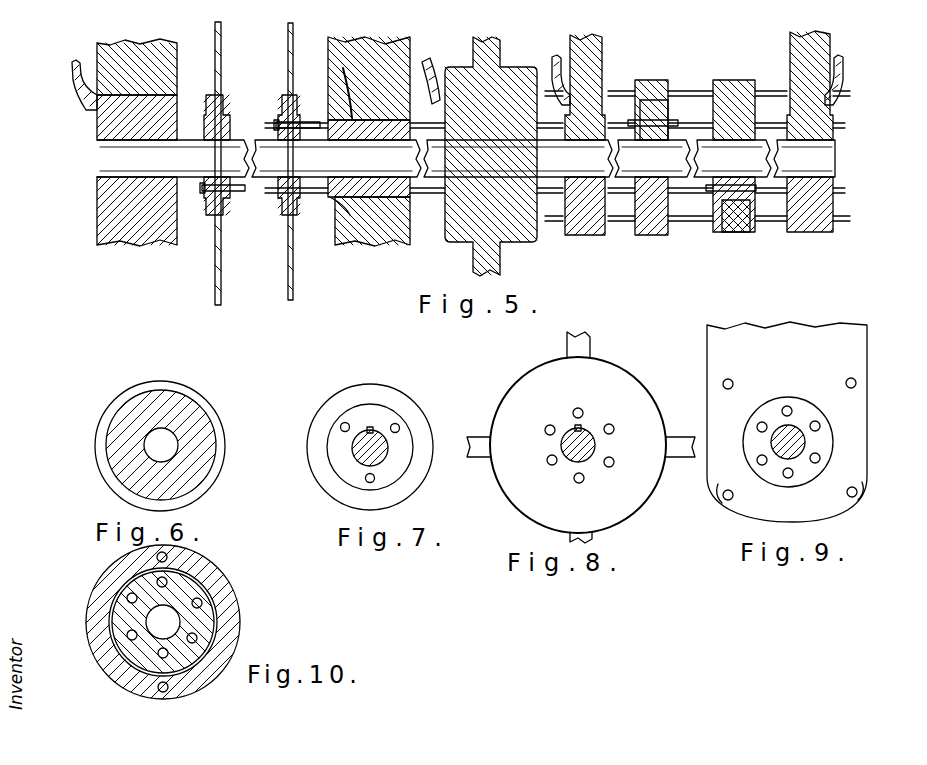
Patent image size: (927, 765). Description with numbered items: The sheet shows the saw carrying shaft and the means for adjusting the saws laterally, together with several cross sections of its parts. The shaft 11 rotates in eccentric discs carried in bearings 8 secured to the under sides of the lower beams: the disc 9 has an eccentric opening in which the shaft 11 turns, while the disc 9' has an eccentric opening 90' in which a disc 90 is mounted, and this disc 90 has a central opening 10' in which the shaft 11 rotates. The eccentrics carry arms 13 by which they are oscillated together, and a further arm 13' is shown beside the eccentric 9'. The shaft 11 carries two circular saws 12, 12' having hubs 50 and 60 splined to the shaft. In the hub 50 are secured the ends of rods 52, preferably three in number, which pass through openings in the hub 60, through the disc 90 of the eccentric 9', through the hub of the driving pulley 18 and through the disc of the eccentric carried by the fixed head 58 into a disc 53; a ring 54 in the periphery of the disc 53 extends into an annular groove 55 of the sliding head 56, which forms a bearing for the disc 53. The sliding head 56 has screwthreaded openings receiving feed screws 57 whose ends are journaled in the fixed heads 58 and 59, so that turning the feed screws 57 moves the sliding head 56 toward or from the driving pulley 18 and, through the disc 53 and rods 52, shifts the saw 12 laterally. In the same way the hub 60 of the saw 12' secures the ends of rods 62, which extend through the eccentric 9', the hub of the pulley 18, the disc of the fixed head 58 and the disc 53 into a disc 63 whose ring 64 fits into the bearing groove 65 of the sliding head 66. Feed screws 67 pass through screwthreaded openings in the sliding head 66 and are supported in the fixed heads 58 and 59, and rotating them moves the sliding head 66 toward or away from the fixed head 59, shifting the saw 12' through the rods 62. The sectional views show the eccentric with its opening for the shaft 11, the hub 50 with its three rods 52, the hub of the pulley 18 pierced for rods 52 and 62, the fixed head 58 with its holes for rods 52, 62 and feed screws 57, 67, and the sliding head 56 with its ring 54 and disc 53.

In FIG. 5, the bearing 8 is at (113, 222).
In FIG. 5, the disc 9 is at (149, 89).
In FIG. 6, the disc 9 is at (160, 435).
In FIG. 5, the disc 9' is at (377, 82).
In FIG. 5, the opening 10' is at (381, 221).
In FIG. 5, the shaft 11 is at (112, 151).
In FIG. 6, the shaft 11 is at (166, 442).
In FIG. 7, the shaft 11 is at (355, 455).
In FIG. 8, the shaft 11 is at (570, 456).
In FIG. 9, the shaft 11 is at (805, 440).
In FIG. 5, the circular saw 12 is at (239, 163).
In FIG. 5, the circular saw 12' is at (310, 161).
In FIG. 5, the arm 13 is at (62, 85).
In FIG. 5, the bracket 13' is at (449, 59).
In FIG. 5, the driving pulley 18 is at (503, 72).
In FIG. 8, the driving pulley 18 is at (603, 384).
In FIG. 5, the hub 50 is at (229, 134).
In FIG. 7, the hub 50 is at (375, 412).
In FIG. 5, the rods 52 is at (243, 192).
In FIG. 7, the rods 52 is at (343, 423).
In FIG. 8, the rods 52 is at (546, 427).
In FIG. 9, the rods 52 is at (760, 423).
In FIG. 10, the rods 52 is at (127, 598).
In FIG. 5, the disc 53 is at (670, 194).
In FIG. 10, the disc 53 is at (200, 628).
In FIG. 5, the ring 54 is at (672, 120).
In FIG. 10, the ring 54 is at (215, 615).
In FIG. 5, the annular groove 55 is at (665, 110).
In FIG. 5, the sliding head 56 is at (650, 86).
In FIG. 10, the sliding head 56 is at (208, 672).
In FIG. 5, the feed screws 57 is at (630, 222).
In FIG. 9, the feed screws 57 is at (731, 500).
In FIG. 5, the fixed head 58 is at (585, 230).
In FIG. 9, the fixed head 58 is at (838, 478).
In FIG. 5, the fixed head 59 is at (798, 232).
In FIG. 5, the hub 60 is at (300, 126).
In FIG. 5, the rods 62 is at (432, 123).
In FIG. 9, the rods 62 is at (791, 408).
In FIG. 10, the rods 62 is at (167, 580).
In FIG. 5, the disc 63 is at (735, 84).
In FIG. 5, the ring 64 is at (756, 192).
In FIG. 5, the bearing groove 65 is at (722, 230).
In FIG. 5, the sliding head 66 is at (740, 230).
In FIG. 5, the feed screws 67 is at (782, 91).
In FIG. 9, the feed screws 67 is at (850, 378).
In FIG. 5, the disc 90 is at (325, 213).
In FIG. 5, the eccentric opening 90' is at (325, 87).